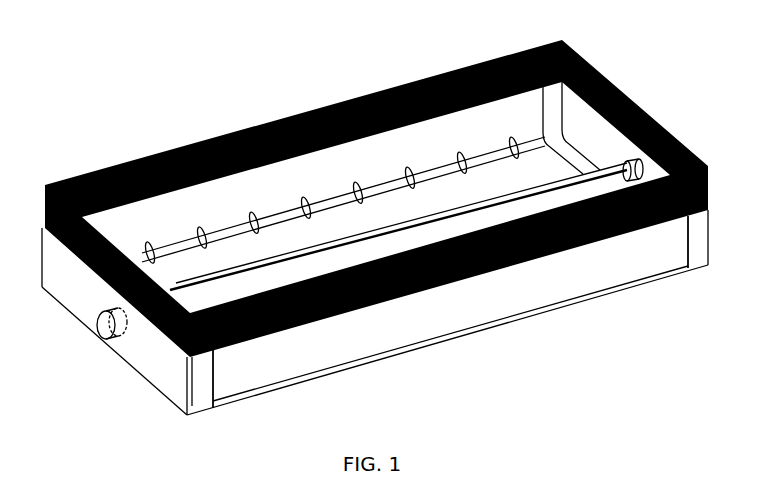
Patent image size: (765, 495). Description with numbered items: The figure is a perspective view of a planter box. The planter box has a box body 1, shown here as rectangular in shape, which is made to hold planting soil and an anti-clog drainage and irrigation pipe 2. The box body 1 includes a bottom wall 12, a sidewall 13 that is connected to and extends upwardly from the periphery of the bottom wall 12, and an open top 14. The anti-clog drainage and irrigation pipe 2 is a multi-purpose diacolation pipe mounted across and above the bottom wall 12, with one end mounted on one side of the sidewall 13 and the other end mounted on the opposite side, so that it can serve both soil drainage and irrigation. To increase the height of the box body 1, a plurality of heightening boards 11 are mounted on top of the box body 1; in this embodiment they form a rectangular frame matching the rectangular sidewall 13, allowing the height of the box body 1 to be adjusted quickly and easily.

The box body 1 is at (615, 307).
The anti-clog drainage and irrigation pipe 2 is at (94, 337).
The heightening boards 11 is at (217, 119).
The bottom wall 12 is at (546, 162).
The sidewall 13 is at (516, 312).
The open top 14 is at (331, 146).